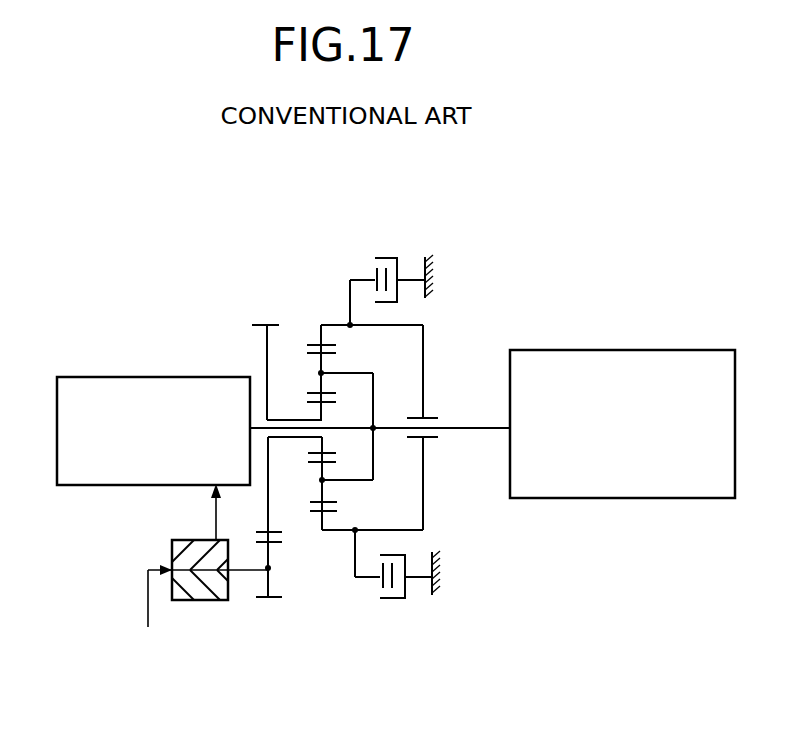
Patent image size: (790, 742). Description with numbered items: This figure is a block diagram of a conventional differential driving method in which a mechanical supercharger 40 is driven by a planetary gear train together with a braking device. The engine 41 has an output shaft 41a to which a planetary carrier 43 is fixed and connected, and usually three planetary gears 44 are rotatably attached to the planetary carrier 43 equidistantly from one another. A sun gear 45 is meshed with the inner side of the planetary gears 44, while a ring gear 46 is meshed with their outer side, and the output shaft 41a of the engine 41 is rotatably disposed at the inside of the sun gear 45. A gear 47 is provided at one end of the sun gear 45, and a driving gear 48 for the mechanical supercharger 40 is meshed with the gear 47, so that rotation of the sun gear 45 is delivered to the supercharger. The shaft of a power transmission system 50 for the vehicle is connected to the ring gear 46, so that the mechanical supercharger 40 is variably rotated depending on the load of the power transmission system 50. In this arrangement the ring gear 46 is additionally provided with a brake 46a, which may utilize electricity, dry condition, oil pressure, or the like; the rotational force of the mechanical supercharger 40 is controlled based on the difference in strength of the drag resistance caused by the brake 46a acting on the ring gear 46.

The mechanical supercharger 40 is at (200, 600).
The engine 41 is at (132, 388).
The output shaft 41a is at (350, 426).
The planetary carrier 43 is at (357, 482).
The planetary gears 44 is at (318, 365).
The sun gear 45 is at (320, 443).
The ring gear 46 is at (430, 360).
The brake 46a is at (384, 258).
The gear 47 is at (253, 320).
The driving gear 48 is at (272, 600).
The power transmission system 50 is at (627, 362).